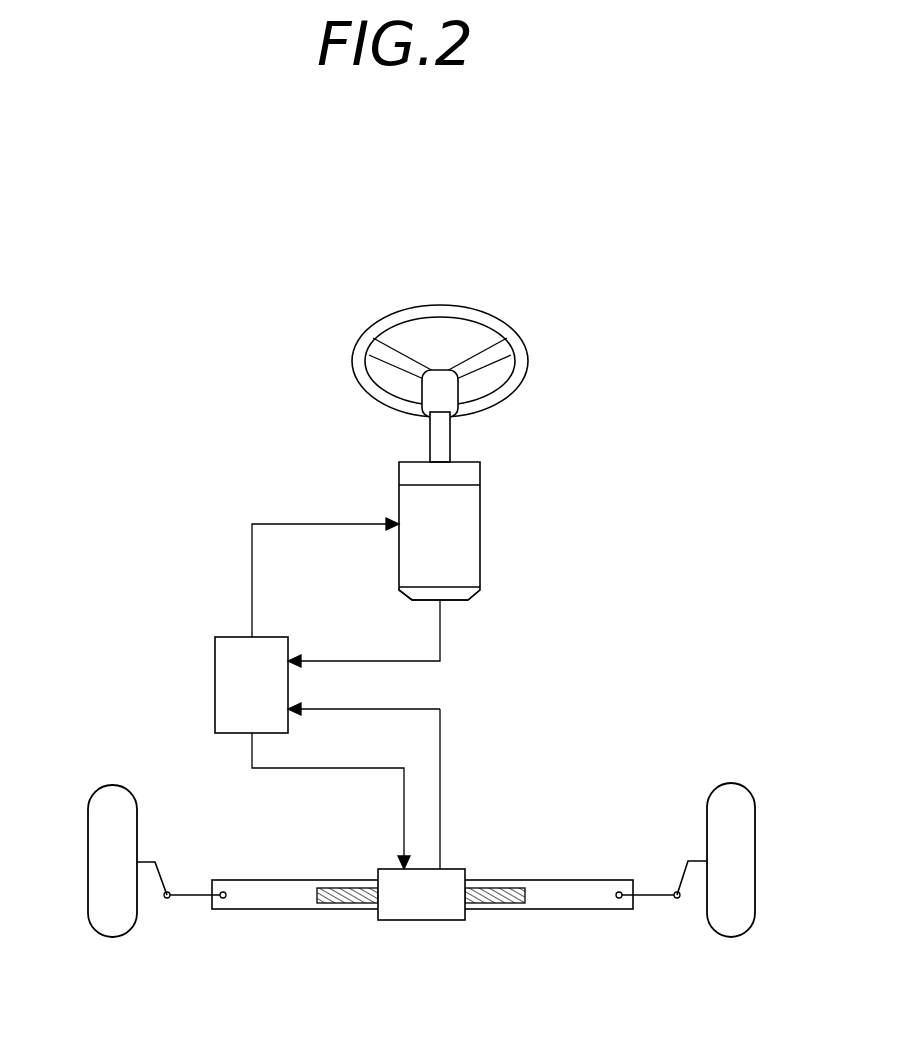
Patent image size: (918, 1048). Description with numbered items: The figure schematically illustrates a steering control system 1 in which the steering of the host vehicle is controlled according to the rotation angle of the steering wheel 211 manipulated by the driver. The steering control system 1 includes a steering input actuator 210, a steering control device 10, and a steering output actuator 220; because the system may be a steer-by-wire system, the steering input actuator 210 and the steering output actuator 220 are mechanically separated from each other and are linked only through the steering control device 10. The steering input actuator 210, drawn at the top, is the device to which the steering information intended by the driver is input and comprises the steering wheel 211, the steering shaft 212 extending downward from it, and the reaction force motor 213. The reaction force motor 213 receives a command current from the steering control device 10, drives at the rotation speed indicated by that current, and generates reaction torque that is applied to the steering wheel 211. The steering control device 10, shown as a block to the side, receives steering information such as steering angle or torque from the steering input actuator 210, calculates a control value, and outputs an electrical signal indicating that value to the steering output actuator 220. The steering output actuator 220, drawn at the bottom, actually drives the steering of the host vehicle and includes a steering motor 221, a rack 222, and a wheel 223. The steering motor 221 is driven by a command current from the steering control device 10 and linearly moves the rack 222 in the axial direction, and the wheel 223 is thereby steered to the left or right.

The steering control system 1 is at (164, 246).
The steering control device 10 is at (215, 680).
The steering input actuator 210 is at (540, 312).
The steering wheel 211 is at (442, 313).
The steering shaft 212 is at (480, 522).
The reaction force motor 213 is at (454, 600).
The steering output actuator 220 is at (457, 928).
The steering motor 221 is at (420, 920).
The rack 222 is at (296, 909).
The wheel 223 is at (110, 937).